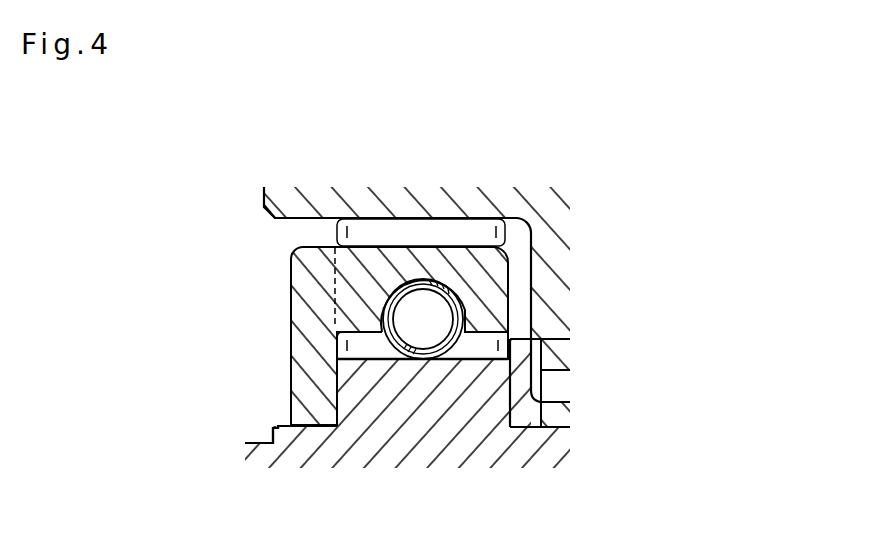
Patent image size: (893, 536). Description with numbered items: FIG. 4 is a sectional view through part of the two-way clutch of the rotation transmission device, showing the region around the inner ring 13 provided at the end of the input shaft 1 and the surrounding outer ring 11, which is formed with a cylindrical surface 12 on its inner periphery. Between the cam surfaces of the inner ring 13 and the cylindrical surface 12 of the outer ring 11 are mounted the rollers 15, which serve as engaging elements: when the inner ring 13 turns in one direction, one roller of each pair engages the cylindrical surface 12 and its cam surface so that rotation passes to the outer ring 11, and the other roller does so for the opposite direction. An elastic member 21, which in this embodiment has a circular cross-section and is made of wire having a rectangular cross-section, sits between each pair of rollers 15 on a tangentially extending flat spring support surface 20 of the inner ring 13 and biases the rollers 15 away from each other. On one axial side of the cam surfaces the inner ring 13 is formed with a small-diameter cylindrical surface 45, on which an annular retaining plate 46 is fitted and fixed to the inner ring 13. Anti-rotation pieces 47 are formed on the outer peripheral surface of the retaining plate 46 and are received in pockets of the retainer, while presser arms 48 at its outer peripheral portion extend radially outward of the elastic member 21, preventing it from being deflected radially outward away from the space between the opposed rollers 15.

The input shaft 1 is at (258, 460).
The outer ring 11 is at (360, 203).
The cylindrical surface 12 is at (307, 222).
The inner ring 13 is at (430, 443).
The rollers 15 is at (467, 230).
The spring support surface 20 is at (486, 332).
The elastic member 21 is at (462, 306).
The small-diameter cylindrical surface 45 is at (290, 420).
The annular retaining plate 46 is at (307, 348).
The anti-rotation pieces 47 is at (302, 270).
The presser arms 48 is at (422, 257).